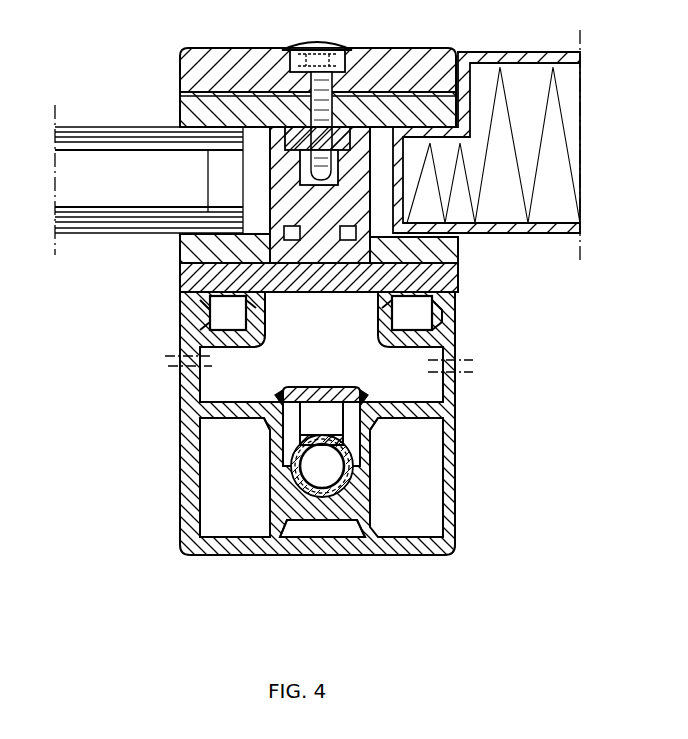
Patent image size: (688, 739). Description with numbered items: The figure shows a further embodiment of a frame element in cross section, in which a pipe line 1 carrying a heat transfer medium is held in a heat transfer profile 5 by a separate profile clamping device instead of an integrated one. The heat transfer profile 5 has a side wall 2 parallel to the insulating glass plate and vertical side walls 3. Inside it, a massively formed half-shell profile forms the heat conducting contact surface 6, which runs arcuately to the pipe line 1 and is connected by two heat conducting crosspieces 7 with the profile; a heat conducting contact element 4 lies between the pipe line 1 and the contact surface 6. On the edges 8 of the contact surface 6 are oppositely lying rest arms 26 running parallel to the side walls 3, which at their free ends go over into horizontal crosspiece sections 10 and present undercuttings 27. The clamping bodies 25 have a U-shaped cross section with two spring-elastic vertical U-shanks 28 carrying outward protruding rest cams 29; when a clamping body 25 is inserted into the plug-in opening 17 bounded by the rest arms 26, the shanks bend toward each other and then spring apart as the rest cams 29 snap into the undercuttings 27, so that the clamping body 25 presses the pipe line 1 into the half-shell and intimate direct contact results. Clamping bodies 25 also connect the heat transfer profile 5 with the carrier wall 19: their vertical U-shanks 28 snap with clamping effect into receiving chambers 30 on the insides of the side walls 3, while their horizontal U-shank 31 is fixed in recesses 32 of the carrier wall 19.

The pipe line 1 is at (300, 482).
The side wall 2 is at (350, 540).
The side walls 3 is at (180, 508).
The heat conducting contact element 4 is at (344, 487).
The heat transfer profile 5 is at (470, 504).
The heat conducting contact surface 6 is at (318, 525).
The heat conducting crosspieces 7 is at (268, 480).
The longitudinal edges 8 is at (292, 450).
The crosspiece sections 10 is at (218, 405).
The plug-in opening 17 is at (338, 398).
The carrier wall 19 is at (458, 270).
The clamping bodies 25 is at (250, 318).
The rest arms 26 is at (270, 441).
The undercuttings 27 is at (280, 402).
The vertical U-shanks 28 is at (360, 398).
The rest cams 29 is at (288, 428).
The receiving chambers 30 is at (398, 350).
The horizontal U-shank 31 is at (432, 305).
The recesses 32 is at (440, 294).